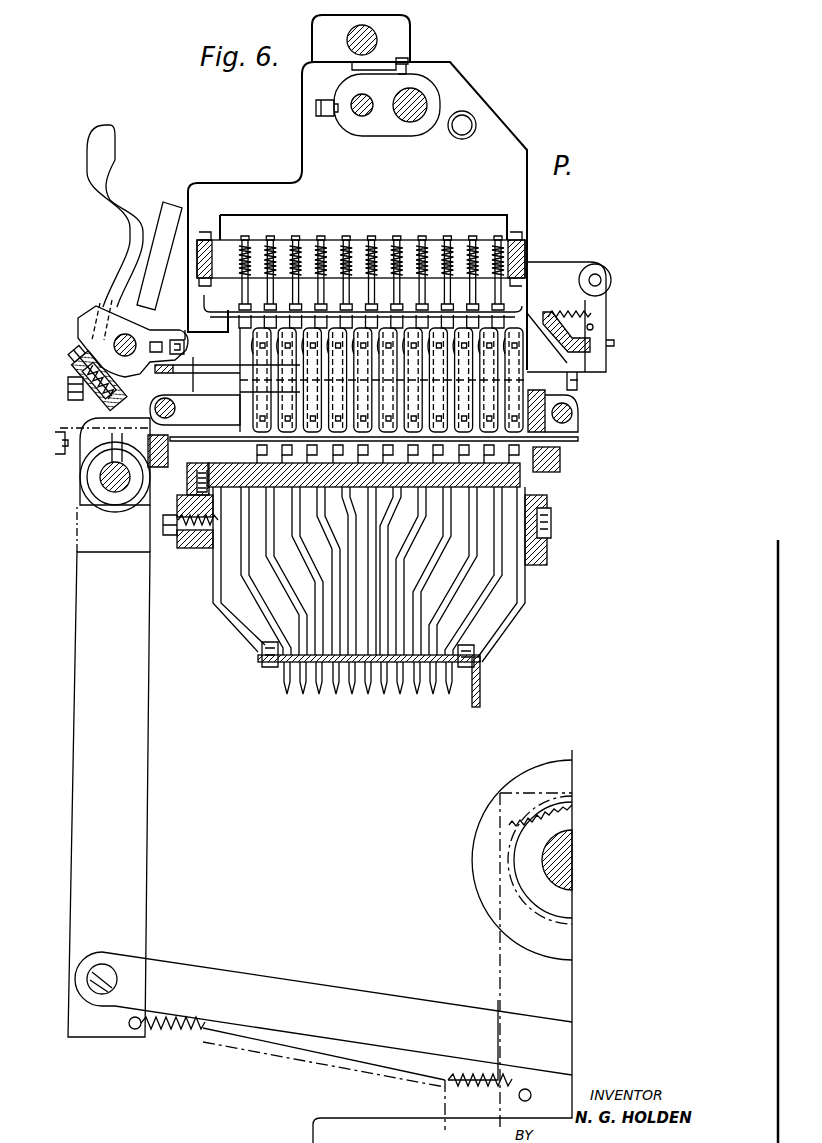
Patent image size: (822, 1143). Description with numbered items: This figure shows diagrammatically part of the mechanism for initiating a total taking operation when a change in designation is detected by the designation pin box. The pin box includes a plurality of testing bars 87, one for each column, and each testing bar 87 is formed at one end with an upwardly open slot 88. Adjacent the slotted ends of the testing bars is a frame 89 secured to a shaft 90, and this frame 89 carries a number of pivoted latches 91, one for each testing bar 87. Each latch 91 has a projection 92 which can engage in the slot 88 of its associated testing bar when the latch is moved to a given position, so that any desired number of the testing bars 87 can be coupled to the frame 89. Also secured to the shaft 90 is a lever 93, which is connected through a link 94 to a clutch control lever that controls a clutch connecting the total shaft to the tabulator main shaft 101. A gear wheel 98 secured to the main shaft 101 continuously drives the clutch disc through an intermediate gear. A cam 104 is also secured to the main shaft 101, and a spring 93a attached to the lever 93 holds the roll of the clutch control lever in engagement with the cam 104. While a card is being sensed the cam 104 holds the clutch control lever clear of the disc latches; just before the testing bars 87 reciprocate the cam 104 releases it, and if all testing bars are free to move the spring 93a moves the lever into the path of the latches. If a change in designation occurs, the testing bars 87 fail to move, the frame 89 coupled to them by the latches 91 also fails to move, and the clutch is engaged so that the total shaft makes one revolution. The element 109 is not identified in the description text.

The pivot stud 109 is at (378, 112).
The pivoted latch 91 is at (140, 291).
The slot 88 is at (113, 342).
The projection 92 is at (162, 346).
The testing bar 87 is at (225, 395).
The frame 89 is at (96, 425).
The shaft 90 is at (103, 479).
The lever 93 is at (86, 683).
The spring 93a is at (308, 1058).
The link 94 is at (330, 1030).
The cam 104 is at (522, 770).
The tabulator main shaft 101 is at (545, 850).
The gear wheel 98 is at (510, 878).